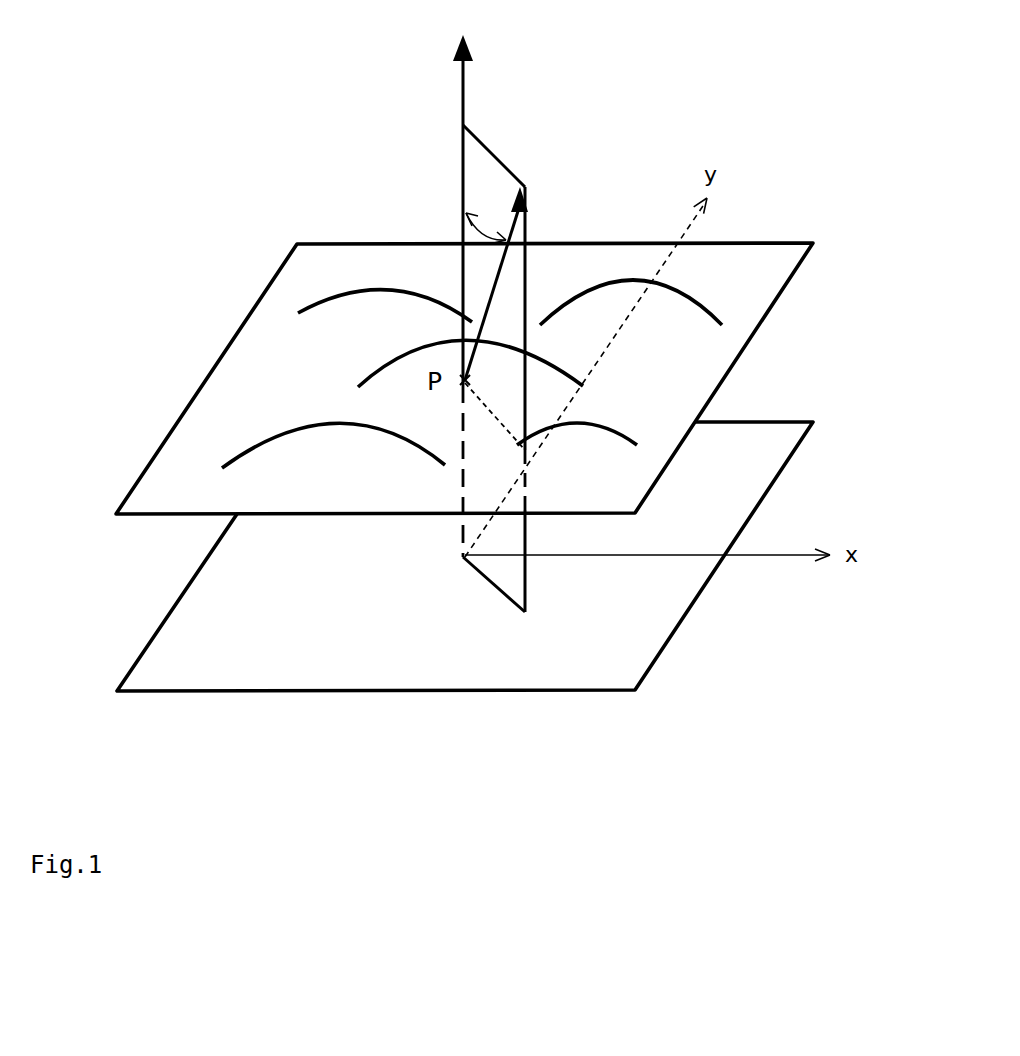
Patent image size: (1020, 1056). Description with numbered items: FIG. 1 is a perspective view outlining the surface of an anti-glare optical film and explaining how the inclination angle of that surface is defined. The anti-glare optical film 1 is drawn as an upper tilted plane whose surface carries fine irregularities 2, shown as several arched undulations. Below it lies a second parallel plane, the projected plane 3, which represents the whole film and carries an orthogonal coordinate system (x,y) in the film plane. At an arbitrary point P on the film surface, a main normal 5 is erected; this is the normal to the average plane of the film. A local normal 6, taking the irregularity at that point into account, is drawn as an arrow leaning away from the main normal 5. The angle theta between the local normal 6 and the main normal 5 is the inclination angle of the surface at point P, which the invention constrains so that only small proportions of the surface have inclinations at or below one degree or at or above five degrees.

The anti-glare optical film 1 is at (258, 395).
The fine irregularities 2 is at (697, 298).
The projected plane 3 is at (617, 615).
The main normal 5 is at (463, 158).
The local normal 6 is at (500, 270).